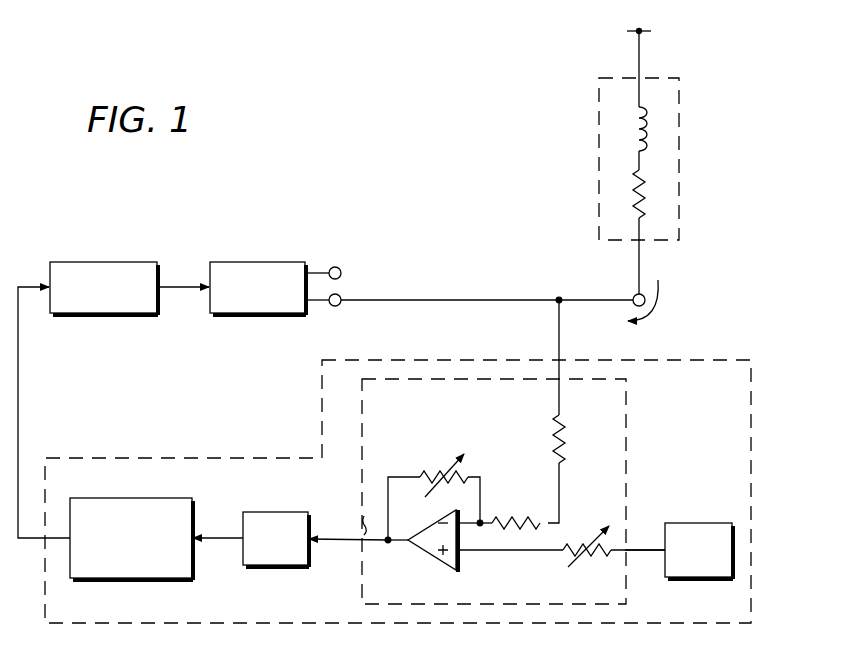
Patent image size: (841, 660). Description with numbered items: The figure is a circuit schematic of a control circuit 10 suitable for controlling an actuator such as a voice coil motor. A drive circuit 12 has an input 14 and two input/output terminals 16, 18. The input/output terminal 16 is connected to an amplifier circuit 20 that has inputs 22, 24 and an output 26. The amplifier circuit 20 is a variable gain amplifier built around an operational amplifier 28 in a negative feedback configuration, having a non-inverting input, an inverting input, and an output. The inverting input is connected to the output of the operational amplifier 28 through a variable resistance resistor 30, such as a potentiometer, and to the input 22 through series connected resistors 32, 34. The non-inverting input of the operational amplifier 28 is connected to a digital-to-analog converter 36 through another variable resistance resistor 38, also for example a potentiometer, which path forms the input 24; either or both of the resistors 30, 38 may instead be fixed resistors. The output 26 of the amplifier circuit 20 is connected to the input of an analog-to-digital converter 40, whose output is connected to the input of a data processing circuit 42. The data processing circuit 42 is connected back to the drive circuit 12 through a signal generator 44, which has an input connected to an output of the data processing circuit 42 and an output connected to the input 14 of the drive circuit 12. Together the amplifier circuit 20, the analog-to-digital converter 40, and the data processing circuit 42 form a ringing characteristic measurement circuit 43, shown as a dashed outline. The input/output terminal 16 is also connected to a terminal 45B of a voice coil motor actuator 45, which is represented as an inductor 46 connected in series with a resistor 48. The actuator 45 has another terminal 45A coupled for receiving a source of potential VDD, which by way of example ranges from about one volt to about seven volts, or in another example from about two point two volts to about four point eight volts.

The control circuit 10 is at (216, 168).
The drive circuit 12 is at (245, 262).
The input 14 is at (181, 290).
The input/output terminal 16 is at (326, 302).
The input/output terminal 18 is at (339, 266).
The amplifier circuit 20 is at (361, 421).
The input 22 is at (561, 329).
The input 24 is at (642, 554).
The output 26 is at (340, 545).
The operational amplifier 28 is at (432, 560).
The variable resistance resistor 30 is at (440, 470).
The resistor 32 is at (524, 517).
The resistor 34 is at (556, 440).
The Digital-to-Analog converter 36 is at (685, 523).
The variable resistance resistor 38 is at (590, 560).
The Analog-to-Digital Converter 40 is at (275, 511).
The data processing circuit 42 is at (105, 498).
The ringing characteristic measurement circuit 43 is at (437, 359).
The signal generator 44 is at (80, 262).
The VCM actuator 45 is at (679, 105).
The terminal 45A is at (636, 50).
The terminal 45B is at (636, 268).
The inductor 46 is at (636, 130).
The resistor 48 is at (643, 200).